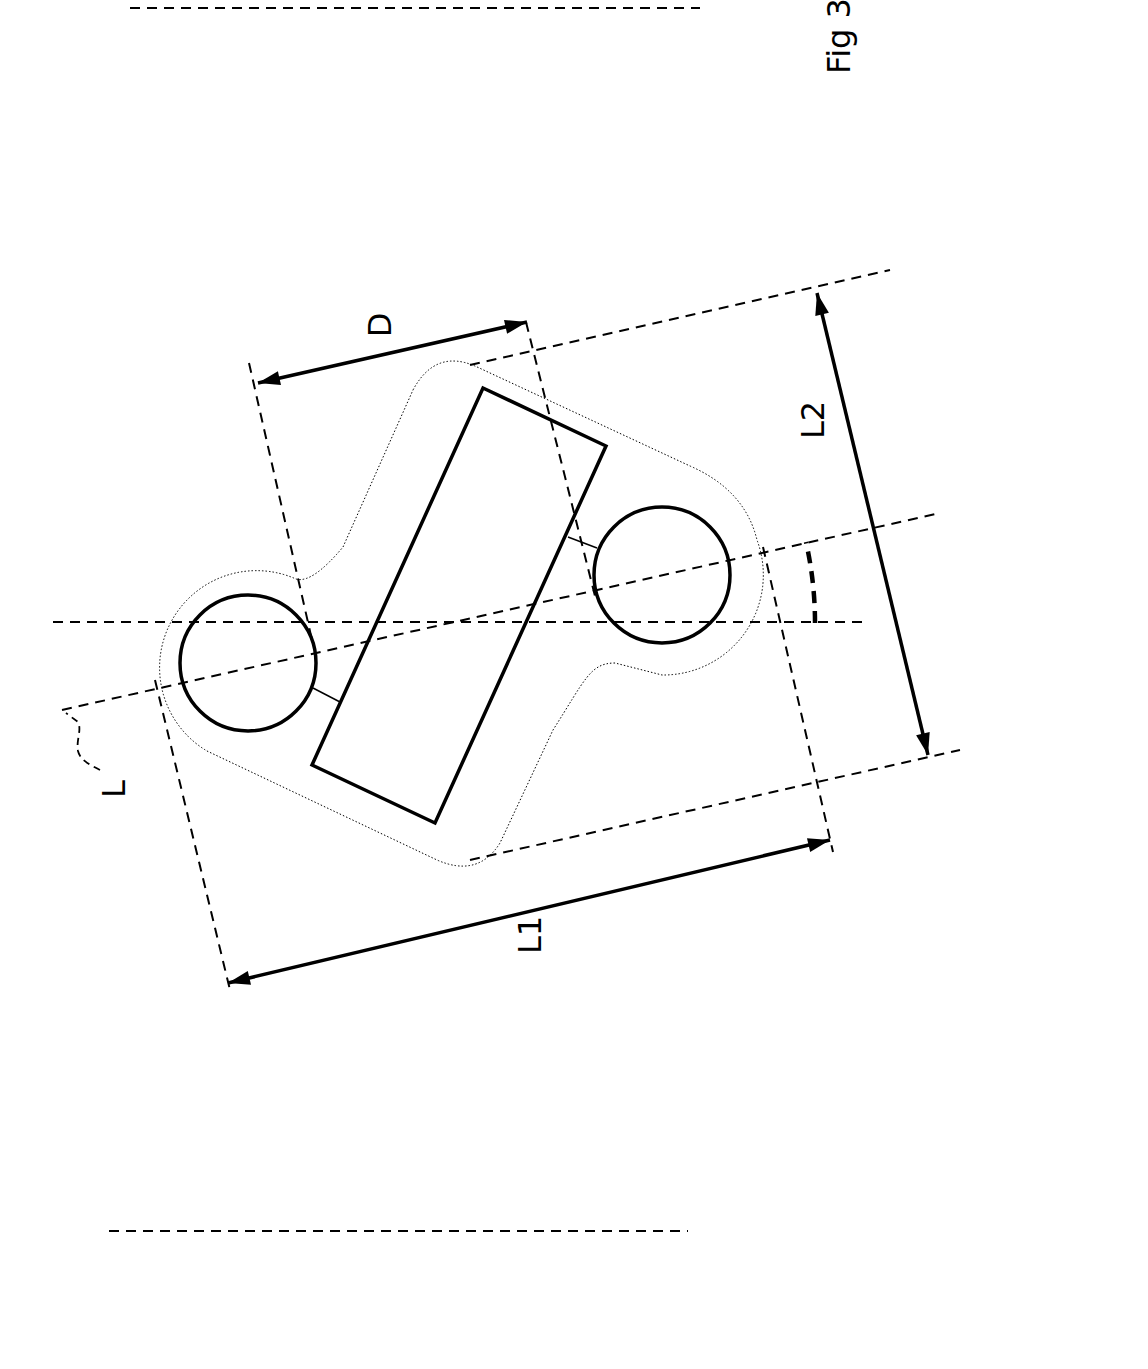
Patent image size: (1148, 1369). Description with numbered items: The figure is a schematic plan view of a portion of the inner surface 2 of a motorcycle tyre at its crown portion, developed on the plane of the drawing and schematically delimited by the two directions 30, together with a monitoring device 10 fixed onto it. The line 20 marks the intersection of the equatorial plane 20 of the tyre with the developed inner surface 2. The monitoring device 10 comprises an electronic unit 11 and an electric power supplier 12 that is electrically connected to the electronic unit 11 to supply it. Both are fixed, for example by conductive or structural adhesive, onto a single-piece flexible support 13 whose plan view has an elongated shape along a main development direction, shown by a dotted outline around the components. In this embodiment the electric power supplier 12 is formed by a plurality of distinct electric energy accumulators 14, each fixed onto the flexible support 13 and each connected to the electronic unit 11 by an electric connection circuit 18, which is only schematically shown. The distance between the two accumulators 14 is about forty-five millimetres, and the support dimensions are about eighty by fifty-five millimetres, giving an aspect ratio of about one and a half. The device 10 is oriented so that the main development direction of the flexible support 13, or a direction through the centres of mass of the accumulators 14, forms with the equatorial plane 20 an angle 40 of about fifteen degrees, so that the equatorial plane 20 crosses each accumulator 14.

The inner surface 2 is at (680, 1039).
The monitoring device 10 is at (168, 368).
The electronic unit 11 is at (424, 706).
The electric power supplier 12 is at (688, 492).
The flexible support 13 is at (377, 479).
The electric energy accumulator 14 is at (226, 601).
The electric connection circuit 18 is at (618, 477).
The equatorial plane 20 is at (93, 620).
The directions delimiting the crown portion 30 is at (163, 8).
The angle 40 is at (845, 575).